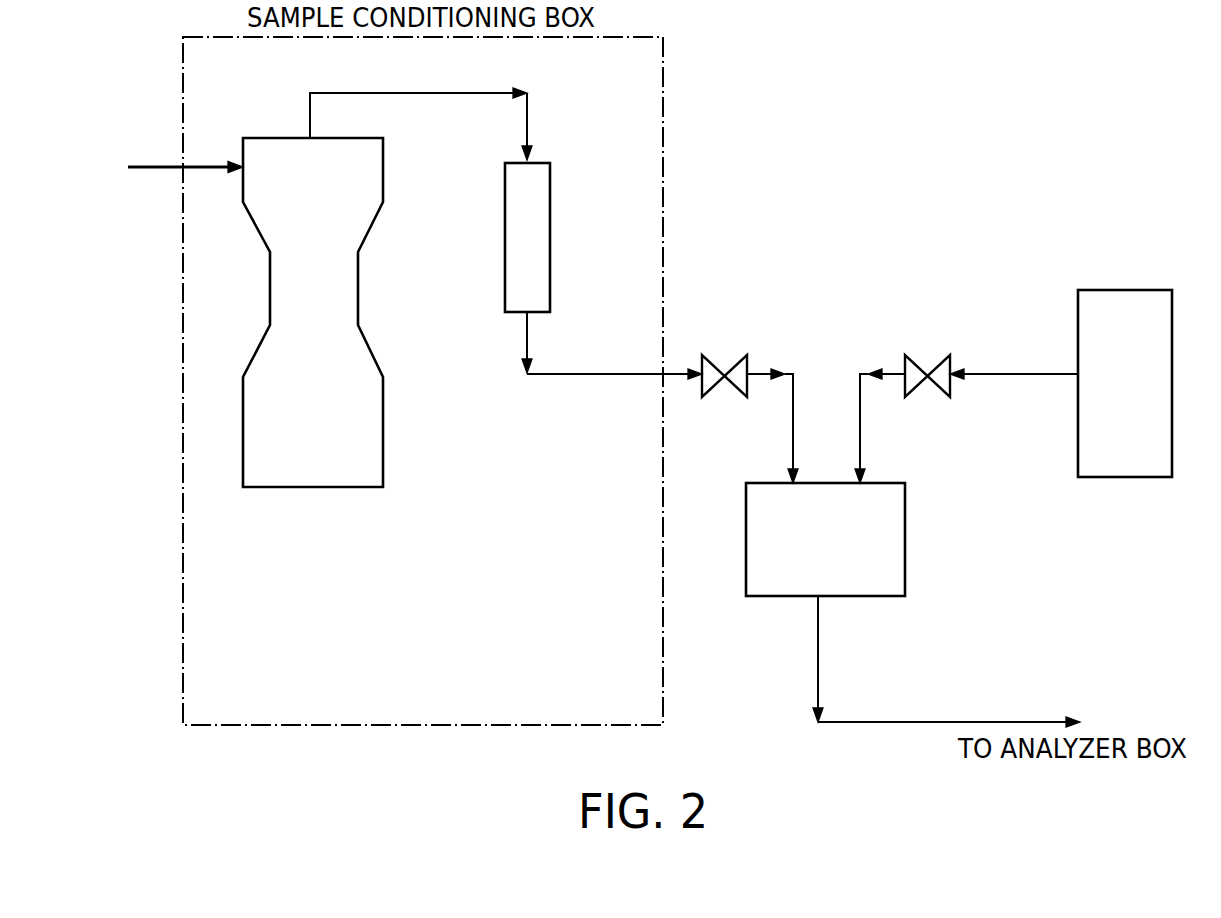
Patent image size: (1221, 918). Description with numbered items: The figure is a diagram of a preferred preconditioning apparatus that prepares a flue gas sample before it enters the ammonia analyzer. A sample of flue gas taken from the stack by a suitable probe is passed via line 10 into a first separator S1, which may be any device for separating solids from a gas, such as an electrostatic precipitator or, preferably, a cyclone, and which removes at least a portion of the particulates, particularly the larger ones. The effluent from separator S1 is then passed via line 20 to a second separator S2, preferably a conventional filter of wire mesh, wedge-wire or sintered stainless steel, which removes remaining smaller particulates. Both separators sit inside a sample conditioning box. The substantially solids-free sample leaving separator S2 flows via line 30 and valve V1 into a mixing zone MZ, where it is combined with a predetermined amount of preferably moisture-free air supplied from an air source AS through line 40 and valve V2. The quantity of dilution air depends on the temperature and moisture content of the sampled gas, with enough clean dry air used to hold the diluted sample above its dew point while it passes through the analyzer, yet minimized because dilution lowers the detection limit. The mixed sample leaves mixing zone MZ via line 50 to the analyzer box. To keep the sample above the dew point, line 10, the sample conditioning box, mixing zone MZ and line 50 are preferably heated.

The line 10 is at (165, 172).
The line 20 is at (527, 113).
The line 30 is at (590, 375).
The line 40 is at (997, 375).
The line 50 is at (900, 723).
The first separator S1 is at (313, 312).
The second separator S2 is at (550, 237).
The valve V1 is at (707, 357).
The valve V2 is at (908, 357).
The mixing zone MZ is at (825, 539).
The air source AS is at (1133, 290).